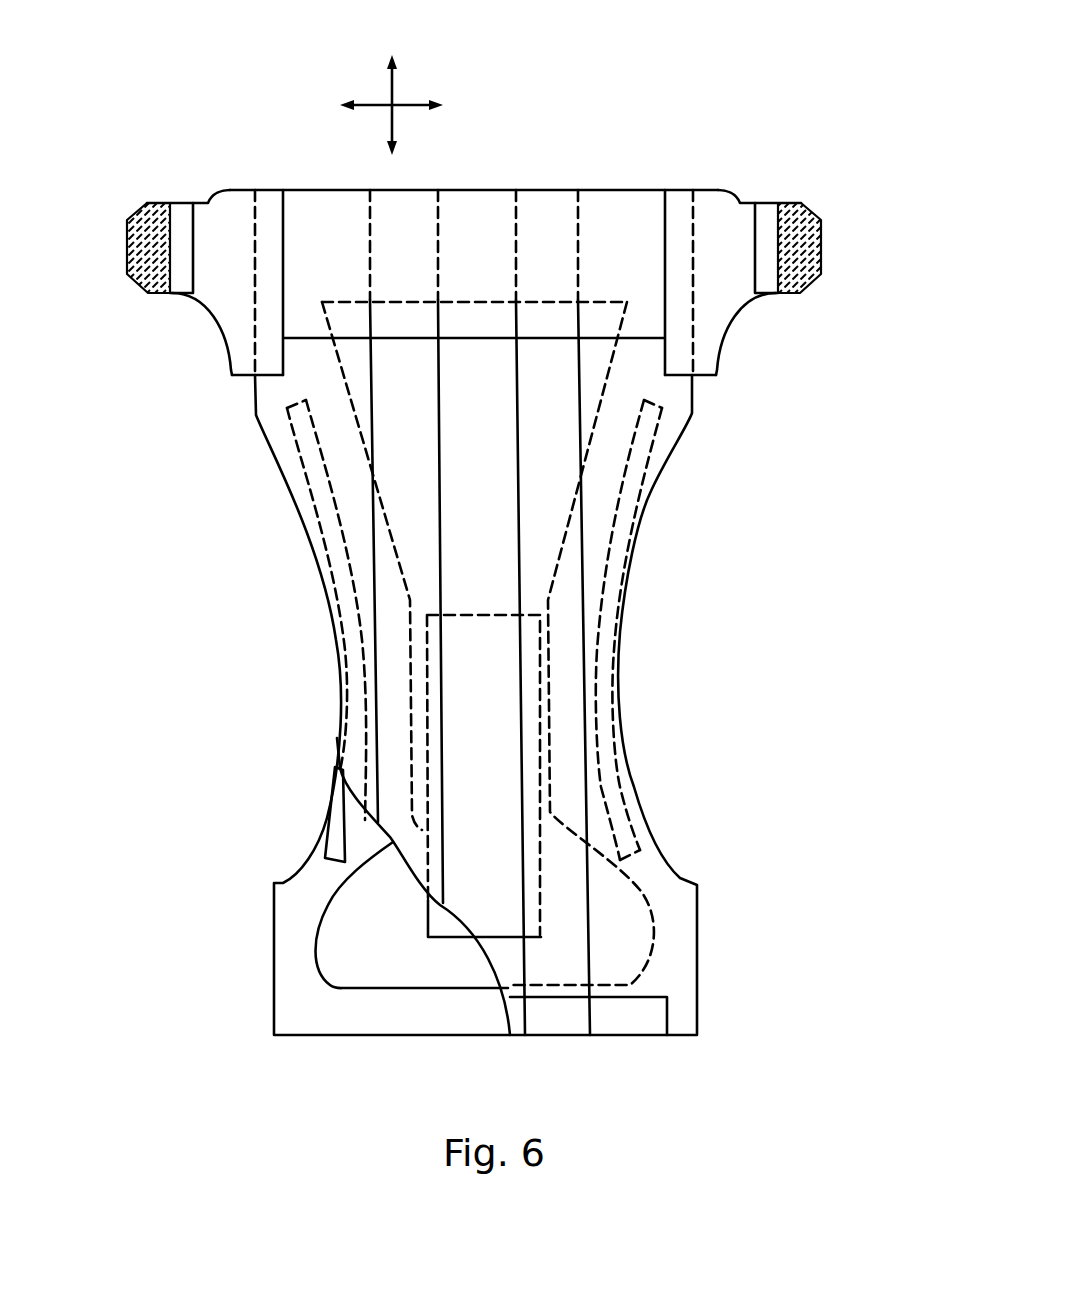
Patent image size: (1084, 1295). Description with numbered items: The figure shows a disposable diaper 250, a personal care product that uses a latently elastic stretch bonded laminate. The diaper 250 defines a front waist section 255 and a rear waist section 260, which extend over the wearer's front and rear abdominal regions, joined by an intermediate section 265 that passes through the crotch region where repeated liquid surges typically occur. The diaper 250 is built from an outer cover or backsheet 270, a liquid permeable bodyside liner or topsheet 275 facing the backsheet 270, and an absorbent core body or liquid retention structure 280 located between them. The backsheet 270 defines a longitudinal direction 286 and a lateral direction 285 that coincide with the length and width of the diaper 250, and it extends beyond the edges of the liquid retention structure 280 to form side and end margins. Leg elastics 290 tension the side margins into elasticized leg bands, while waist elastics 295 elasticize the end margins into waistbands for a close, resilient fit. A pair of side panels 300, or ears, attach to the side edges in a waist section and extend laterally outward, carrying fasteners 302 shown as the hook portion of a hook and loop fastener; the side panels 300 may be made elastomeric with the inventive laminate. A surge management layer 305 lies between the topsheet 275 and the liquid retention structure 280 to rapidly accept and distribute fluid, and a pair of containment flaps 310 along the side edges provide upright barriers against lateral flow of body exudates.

The disposable diaper 250 is at (678, 659).
The front waist section 255 is at (712, 872).
The rear waist section 260 is at (712, 398).
The intermediate section 265 is at (726, 525).
The backsheet 270 is at (285, 928).
The topsheet 275 is at (405, 862).
The liquid retention structure 280 is at (318, 957).
The lateral direction 285 is at (407, 108).
The longitudinal direction 286 is at (393, 93).
The leg elastics 290 is at (337, 837).
The waist elastics 295 is at (618, 203).
The side panels 300 is at (232, 358).
The fasteners 302 is at (148, 296).
The surge management layer 305 is at (428, 932).
The containment flaps 310 is at (363, 519).